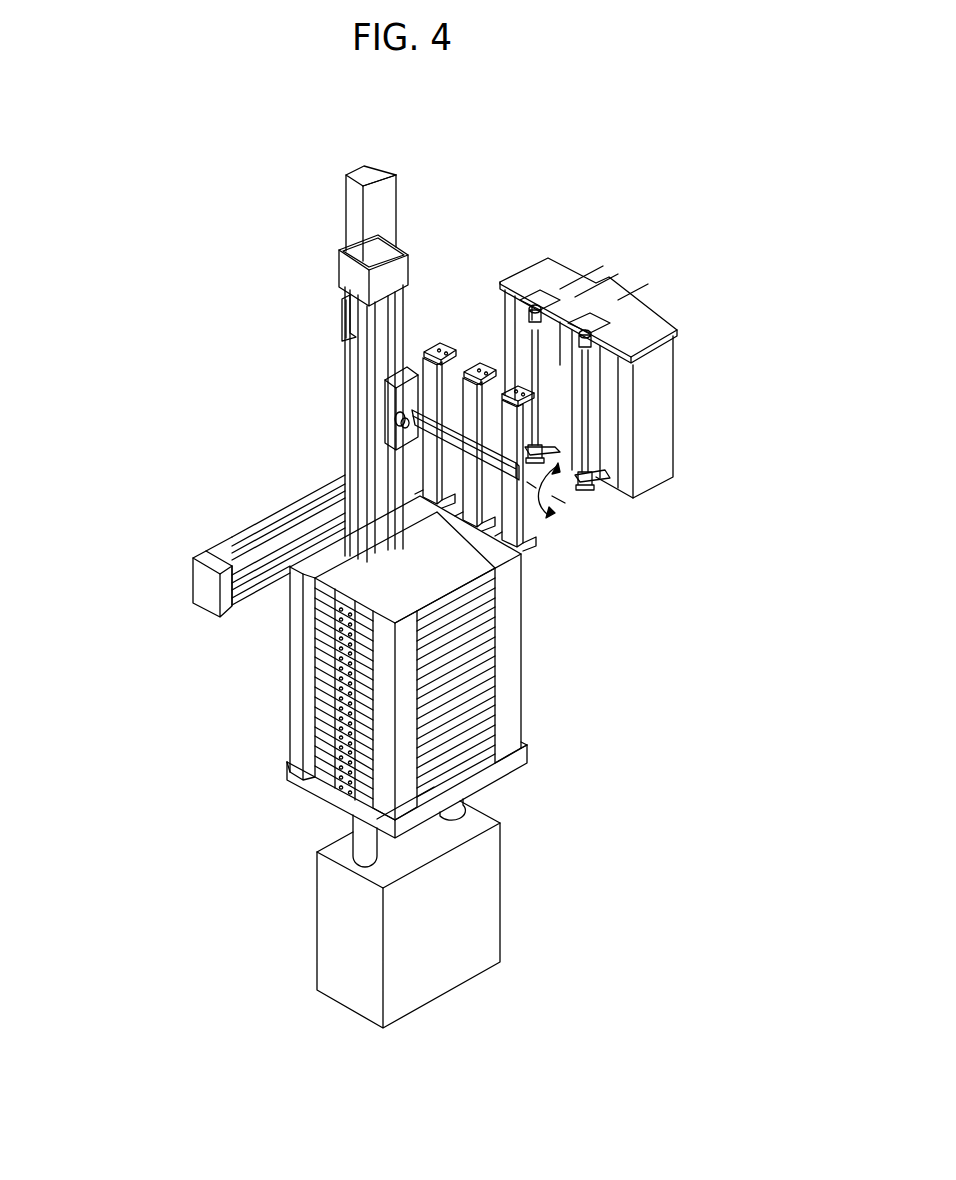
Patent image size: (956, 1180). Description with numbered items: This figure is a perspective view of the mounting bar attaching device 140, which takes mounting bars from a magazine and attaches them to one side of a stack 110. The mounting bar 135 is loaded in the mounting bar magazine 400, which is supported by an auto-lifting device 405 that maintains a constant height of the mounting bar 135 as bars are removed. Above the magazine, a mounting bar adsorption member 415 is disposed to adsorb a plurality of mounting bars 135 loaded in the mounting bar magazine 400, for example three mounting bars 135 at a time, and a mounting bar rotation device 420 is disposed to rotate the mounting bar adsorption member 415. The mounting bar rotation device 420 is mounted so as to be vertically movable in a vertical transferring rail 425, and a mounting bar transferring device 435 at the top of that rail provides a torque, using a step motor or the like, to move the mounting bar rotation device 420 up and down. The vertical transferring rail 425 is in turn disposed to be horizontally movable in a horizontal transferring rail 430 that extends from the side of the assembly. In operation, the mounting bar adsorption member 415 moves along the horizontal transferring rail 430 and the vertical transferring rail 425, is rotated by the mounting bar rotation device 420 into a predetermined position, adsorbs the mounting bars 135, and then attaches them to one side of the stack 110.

The mounting bar attaching device 140 is at (190, 322).
The mounting bar transferring device 435 is at (357, 213).
The vertical transferring rail 425 is at (402, 308).
The mounting bar rotation device 420 is at (402, 427).
The mounting bar 135 is at (473, 492).
The horizontal transferring rail 430 is at (216, 551).
The mounting bar magazine 400 is at (526, 677).
The auto-lifting device 405 is at (450, 963).
The mounting bar adsorption member 415 is at (525, 515).
The stack 110 is at (676, 366).